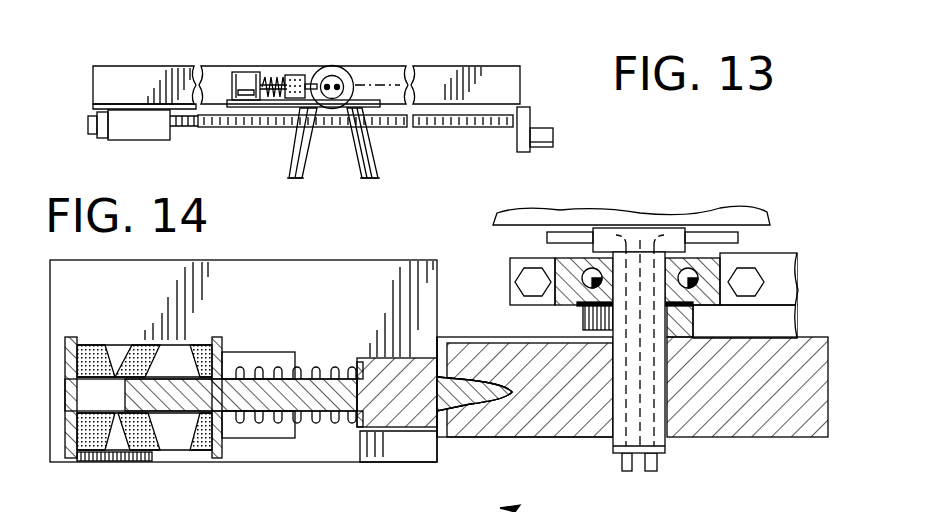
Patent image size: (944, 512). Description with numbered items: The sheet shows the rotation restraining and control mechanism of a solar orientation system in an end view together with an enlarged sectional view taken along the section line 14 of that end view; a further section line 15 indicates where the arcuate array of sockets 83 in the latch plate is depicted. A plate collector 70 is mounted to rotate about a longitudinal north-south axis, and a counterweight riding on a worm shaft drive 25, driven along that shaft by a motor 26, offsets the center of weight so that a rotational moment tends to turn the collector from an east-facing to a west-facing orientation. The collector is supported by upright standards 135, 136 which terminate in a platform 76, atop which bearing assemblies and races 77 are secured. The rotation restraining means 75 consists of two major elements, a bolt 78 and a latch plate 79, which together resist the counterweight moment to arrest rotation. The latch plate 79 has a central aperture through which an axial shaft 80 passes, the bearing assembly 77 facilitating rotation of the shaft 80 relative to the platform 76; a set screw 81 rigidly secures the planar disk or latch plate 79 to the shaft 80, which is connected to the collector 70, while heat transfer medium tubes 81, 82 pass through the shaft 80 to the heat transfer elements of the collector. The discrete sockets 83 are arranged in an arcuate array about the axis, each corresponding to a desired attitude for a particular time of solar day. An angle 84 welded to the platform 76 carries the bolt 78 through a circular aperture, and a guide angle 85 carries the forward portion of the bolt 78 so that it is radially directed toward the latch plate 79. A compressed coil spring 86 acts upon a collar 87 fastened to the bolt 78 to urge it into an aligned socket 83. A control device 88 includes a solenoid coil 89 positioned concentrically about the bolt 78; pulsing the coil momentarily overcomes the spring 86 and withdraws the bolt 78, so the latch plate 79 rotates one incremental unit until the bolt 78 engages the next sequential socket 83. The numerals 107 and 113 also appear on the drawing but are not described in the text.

In FIG. 13, the section line 14— 14 is at (225, 85).
In FIG. 14, the section line 15— 15 is at (500, 392).
In FIG. 13, the worm shaft drive 25 is at (457, 128).
In FIG. 13, the motor 26 is at (548, 148).
In FIG. 13, the plate collector 70 is at (530, 70).
In FIG. 14, the plate collector 70 is at (730, 217).
In FIG. 13, the rotation restraining means 75 is at (297, 68).
In FIG. 14, the rotation restraining means 75 is at (418, 463).
In FIG. 13, the platform 76 is at (247, 107).
In FIG. 14, the platform 76 is at (310, 268).
In FIG. 14, the bearing assemblies and races 77 is at (717, 271).
In FIG. 13, the bolt 78 is at (277, 93).
In FIG. 14, the bolt 78 is at (343, 425).
In FIG. 13, the latch plate 79 is at (337, 67).
In FIG. 14, the latch plate 79 is at (828, 362).
In FIG. 14, the axial shaft 80 is at (668, 446).
In FIG. 14, the set screw 81 is at (583, 325).
In FIG. 14, the heat transfer medium tube 82 is at (657, 465).
In FIG. 14, the sockets 83 is at (738, 498).
In FIG. 13, the angle 84 is at (263, 75).
In FIG. 14, the angle 84 is at (258, 354).
In FIG. 14, the guide angle 85 is at (407, 357).
In FIG. 14, the compressed coil spring 86 is at (313, 428).
In FIG. 14, the collar 87 is at (358, 362).
In FIG. 13, the control device 88 is at (243, 70).
In FIG. 14, the control device 88 is at (92, 461).
In FIG. 14, the solenoid coil 89 is at (165, 442).
In FIG. 14, the arrow 107 is at (520, 495).
In FIG. 14, the bearing block 113 is at (510, 268).
In FIG. 13, the upright standard 135 is at (377, 163).
In FIG. 13, the upright standard 136 is at (288, 164).